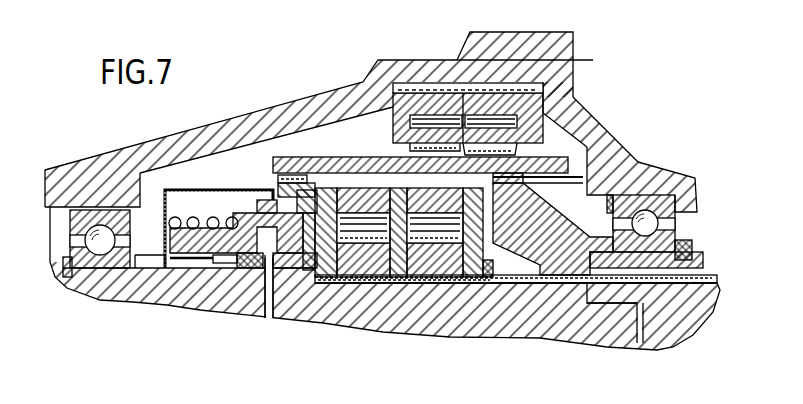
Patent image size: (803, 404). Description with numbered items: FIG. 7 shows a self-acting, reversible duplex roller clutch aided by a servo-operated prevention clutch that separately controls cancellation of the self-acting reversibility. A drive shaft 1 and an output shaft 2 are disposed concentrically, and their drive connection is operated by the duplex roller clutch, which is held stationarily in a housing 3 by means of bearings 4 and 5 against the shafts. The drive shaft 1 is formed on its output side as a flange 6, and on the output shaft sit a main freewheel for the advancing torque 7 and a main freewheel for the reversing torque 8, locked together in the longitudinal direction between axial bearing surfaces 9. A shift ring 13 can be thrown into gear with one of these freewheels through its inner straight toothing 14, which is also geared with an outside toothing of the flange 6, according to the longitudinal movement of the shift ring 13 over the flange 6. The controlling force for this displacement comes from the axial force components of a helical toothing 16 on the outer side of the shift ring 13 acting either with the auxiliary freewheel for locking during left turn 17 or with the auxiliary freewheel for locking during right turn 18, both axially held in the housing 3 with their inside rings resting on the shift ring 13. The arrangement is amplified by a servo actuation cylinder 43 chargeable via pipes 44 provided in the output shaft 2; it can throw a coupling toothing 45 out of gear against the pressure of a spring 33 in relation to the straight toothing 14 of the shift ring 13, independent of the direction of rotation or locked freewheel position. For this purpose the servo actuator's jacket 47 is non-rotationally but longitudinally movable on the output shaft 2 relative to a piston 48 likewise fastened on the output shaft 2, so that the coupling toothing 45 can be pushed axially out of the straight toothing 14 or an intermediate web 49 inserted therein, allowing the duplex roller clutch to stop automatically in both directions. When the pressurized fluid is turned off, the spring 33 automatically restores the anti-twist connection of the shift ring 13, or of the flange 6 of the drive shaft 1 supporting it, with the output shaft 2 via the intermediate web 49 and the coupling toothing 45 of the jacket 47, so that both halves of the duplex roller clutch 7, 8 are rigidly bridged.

The drive shaft 1 is at (676, 305).
The output shaft 2 is at (560, 320).
The housing 3 is at (352, 100).
The bearing 4 is at (693, 178).
The bearing 5 is at (82, 198).
The flange 6 is at (533, 231).
The main freewheel for the advancing torque 7 is at (367, 236).
The main freewheel for the reversing torque 8 is at (433, 236).
The axial bearing surfaces 9 is at (318, 176).
The shift ring 13 is at (563, 168).
The inner straight toothing 14 is at (313, 197).
The helical toothing 16 is at (552, 150).
The auxiliary freewheel for locking during left turn 17 is at (433, 107).
The auxiliary freewheel for locking during right turn 18 is at (468, 62).
The spring 33 is at (193, 222).
The servo actuation cylinder 43 is at (242, 266).
The pipes 44 is at (268, 300).
The coupling toothing 45 is at (267, 210).
The servo actuator's jacket 47 is at (210, 262).
The piston 48 is at (303, 262).
The intermediate web 49 is at (267, 203).